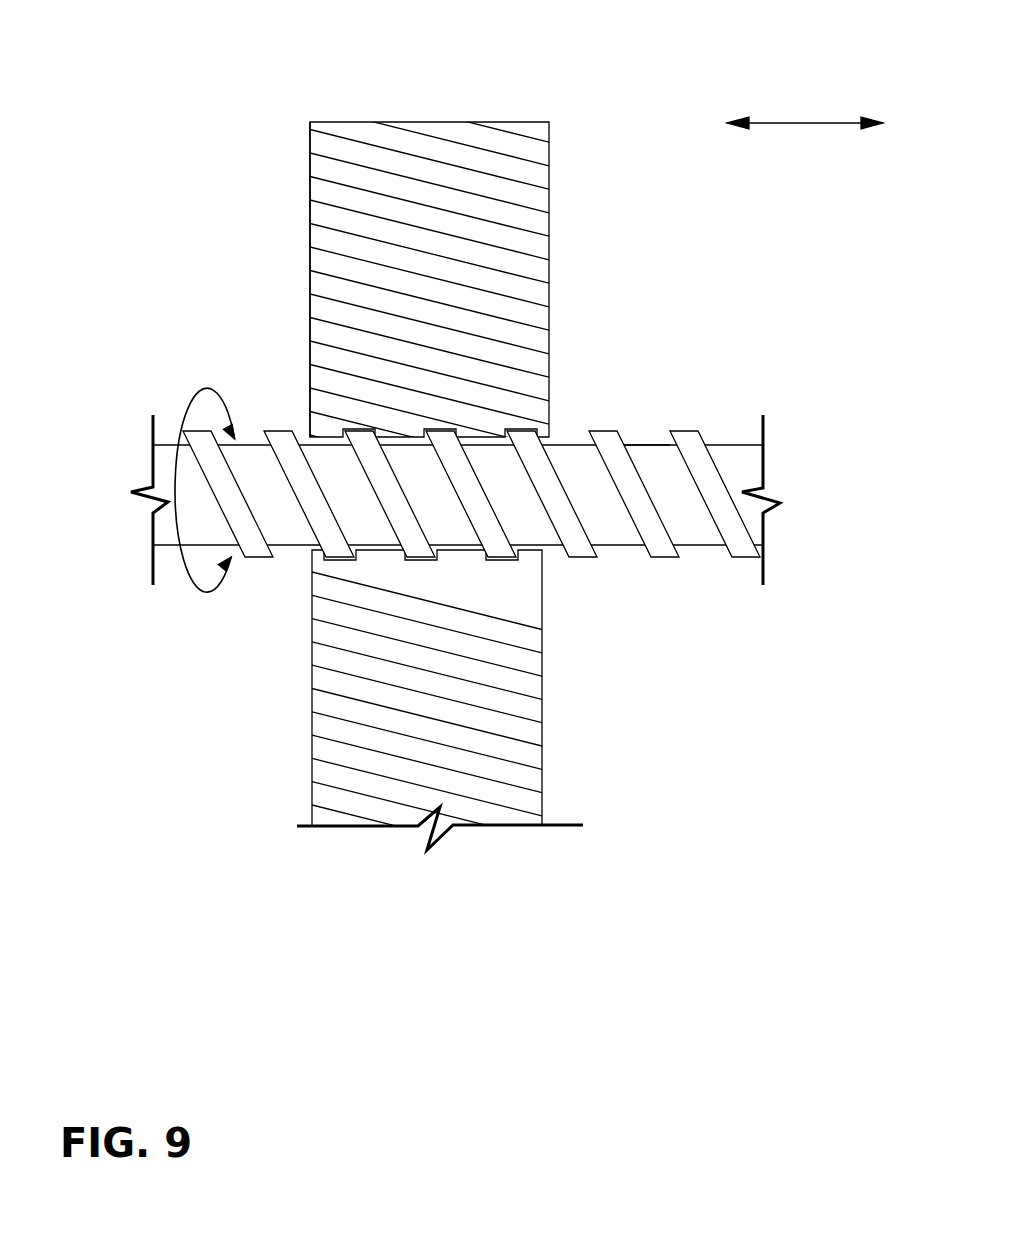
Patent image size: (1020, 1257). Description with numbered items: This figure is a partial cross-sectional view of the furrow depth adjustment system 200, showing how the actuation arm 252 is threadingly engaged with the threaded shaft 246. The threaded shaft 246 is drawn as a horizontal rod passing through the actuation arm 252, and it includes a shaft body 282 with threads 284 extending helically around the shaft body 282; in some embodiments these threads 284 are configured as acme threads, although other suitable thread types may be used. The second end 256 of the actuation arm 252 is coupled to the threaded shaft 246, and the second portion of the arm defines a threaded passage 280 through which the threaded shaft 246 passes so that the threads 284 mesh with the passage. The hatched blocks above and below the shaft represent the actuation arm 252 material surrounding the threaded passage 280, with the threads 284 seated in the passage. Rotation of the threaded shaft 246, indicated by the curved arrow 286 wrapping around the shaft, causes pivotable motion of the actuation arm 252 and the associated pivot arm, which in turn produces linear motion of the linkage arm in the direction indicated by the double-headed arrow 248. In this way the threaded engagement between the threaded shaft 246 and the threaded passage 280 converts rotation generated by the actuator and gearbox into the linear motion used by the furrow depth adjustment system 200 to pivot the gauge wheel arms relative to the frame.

The furrow depth adjustment system 200 is at (146, 158).
The threaded shaft 246 is at (633, 558).
The arrow 248 is at (792, 124).
The actuation arm 252 is at (310, 280).
The second end 256 is at (434, 105).
The threaded passage 280 is at (306, 435).
The shaft body 282 is at (641, 440).
The threads 284 is at (597, 432).
The arrow 286 is at (203, 594).